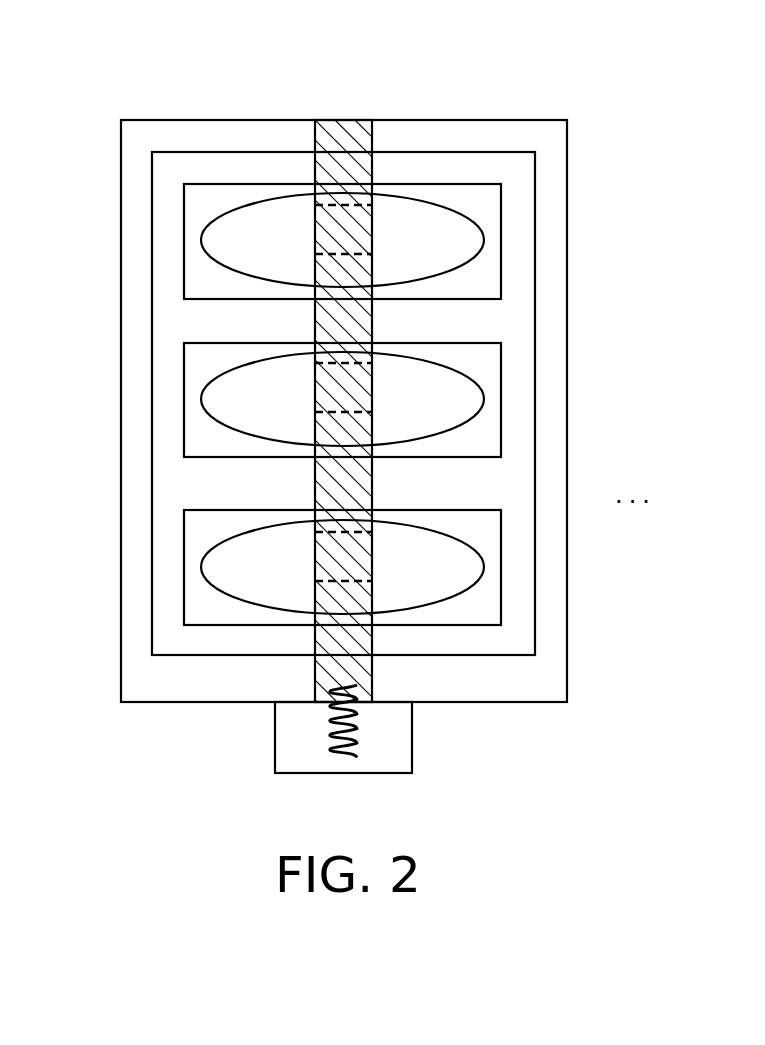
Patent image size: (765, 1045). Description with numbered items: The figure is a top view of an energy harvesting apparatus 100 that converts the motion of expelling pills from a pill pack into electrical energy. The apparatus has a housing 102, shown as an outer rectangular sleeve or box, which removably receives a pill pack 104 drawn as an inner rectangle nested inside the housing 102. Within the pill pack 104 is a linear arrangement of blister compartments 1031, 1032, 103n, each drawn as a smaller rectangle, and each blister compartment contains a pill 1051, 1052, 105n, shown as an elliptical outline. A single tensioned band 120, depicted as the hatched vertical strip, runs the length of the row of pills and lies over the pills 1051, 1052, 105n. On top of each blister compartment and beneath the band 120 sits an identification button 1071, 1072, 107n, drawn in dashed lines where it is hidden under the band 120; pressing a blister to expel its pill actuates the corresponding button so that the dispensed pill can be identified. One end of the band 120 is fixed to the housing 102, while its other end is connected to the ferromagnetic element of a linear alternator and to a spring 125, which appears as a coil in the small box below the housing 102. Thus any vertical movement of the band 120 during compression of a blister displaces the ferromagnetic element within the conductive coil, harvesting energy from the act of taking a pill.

The energy harvesting apparatus 100 is at (152, 80).
The housing 102 is at (121, 563).
The pill pack 104 is at (152, 413).
The band 120 is at (332, 313).
The blister compartment 1031 is at (490, 287).
The pill 1051 is at (448, 255).
The identification button 1071 is at (360, 230).
The blister compartment 1032 is at (490, 445).
The pill 1052 is at (448, 413).
The identification button 1072 is at (360, 389).
The blister compartment 103n is at (490, 613).
The pill 105n is at (448, 580).
The identification button 107n is at (360, 557).
The spring 125 is at (332, 738).